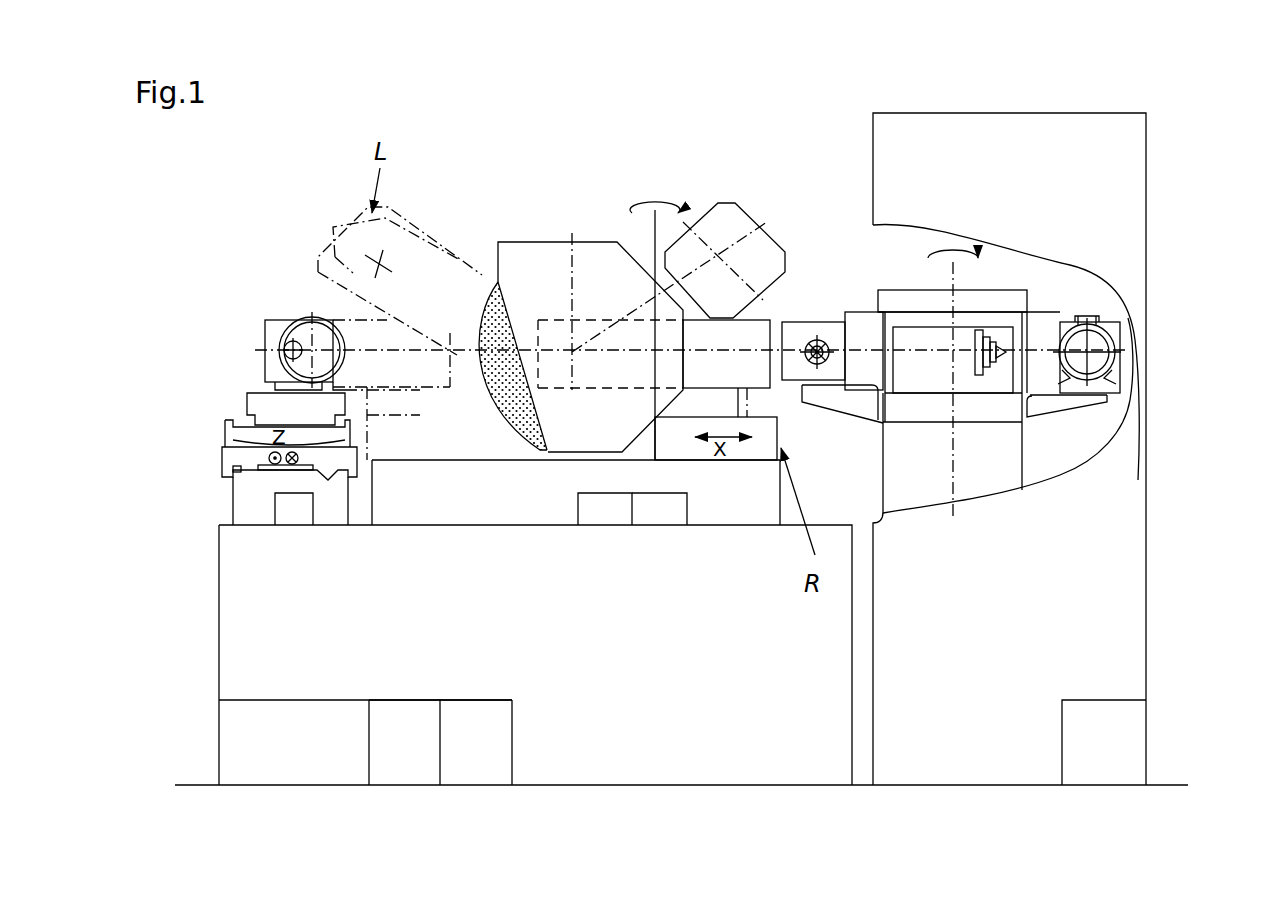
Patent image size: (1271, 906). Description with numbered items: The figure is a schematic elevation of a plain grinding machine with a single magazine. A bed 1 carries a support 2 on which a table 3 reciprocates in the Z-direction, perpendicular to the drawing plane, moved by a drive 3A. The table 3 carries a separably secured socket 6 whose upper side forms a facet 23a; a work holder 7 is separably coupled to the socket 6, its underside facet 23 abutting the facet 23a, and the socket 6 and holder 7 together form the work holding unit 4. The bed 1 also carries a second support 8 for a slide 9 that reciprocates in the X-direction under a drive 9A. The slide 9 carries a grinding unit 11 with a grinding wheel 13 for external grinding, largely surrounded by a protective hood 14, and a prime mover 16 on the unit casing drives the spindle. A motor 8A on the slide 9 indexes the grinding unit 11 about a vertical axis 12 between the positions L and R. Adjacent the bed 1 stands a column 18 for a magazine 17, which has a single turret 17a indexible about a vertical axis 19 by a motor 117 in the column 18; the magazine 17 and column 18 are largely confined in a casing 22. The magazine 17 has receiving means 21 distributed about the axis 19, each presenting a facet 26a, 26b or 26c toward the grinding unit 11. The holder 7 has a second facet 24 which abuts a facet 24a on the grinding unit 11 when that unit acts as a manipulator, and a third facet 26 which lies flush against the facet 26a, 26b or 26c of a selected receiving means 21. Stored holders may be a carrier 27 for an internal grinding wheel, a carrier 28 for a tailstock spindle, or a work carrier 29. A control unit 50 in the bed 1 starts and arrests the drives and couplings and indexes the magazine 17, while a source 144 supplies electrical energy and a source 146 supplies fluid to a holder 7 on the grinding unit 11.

The bed 1 is at (225, 562).
The support 2 is at (250, 500).
The table 3 is at (233, 458).
The drive 3A is at (290, 520).
The work holding unit 4 is at (247, 296).
The socket 6 is at (250, 402).
The work holder 7 is at (270, 340).
The second support 8 is at (533, 510).
The motor 8A is at (603, 525).
The slide 9 is at (747, 452).
The drive 9A is at (655, 522).
The grinding unit 11 is at (770, 320).
The vertical axis 12 is at (648, 212).
The grinding wheel 13 is at (498, 283).
The protective hood 14 is at (545, 252).
The prime mover 16 is at (717, 228).
The magazine 17 is at (998, 287).
The turret 17a is at (1040, 327).
The column 18 is at (1005, 478).
The vertical axis 19 is at (957, 283).
The receiving means 21 is at (1003, 412).
The casing 22 is at (1135, 160).
The facet 23 is at (324, 393).
The facet 23a is at (280, 372).
The second facet 24 is at (340, 338).
The facet 24a is at (322, 358).
The third facet 26 is at (262, 330).
The facet 26a is at (838, 332).
The facet 26b is at (910, 315).
The facet 26c is at (1063, 318).
The carrier 27 is at (843, 395).
The carrier 28 is at (963, 382).
The work carrier 29 is at (1110, 385).
The control unit 50 is at (365, 742).
The motor 117 is at (1070, 730).
The source 144 is at (404, 728).
The source 146 is at (476, 728).